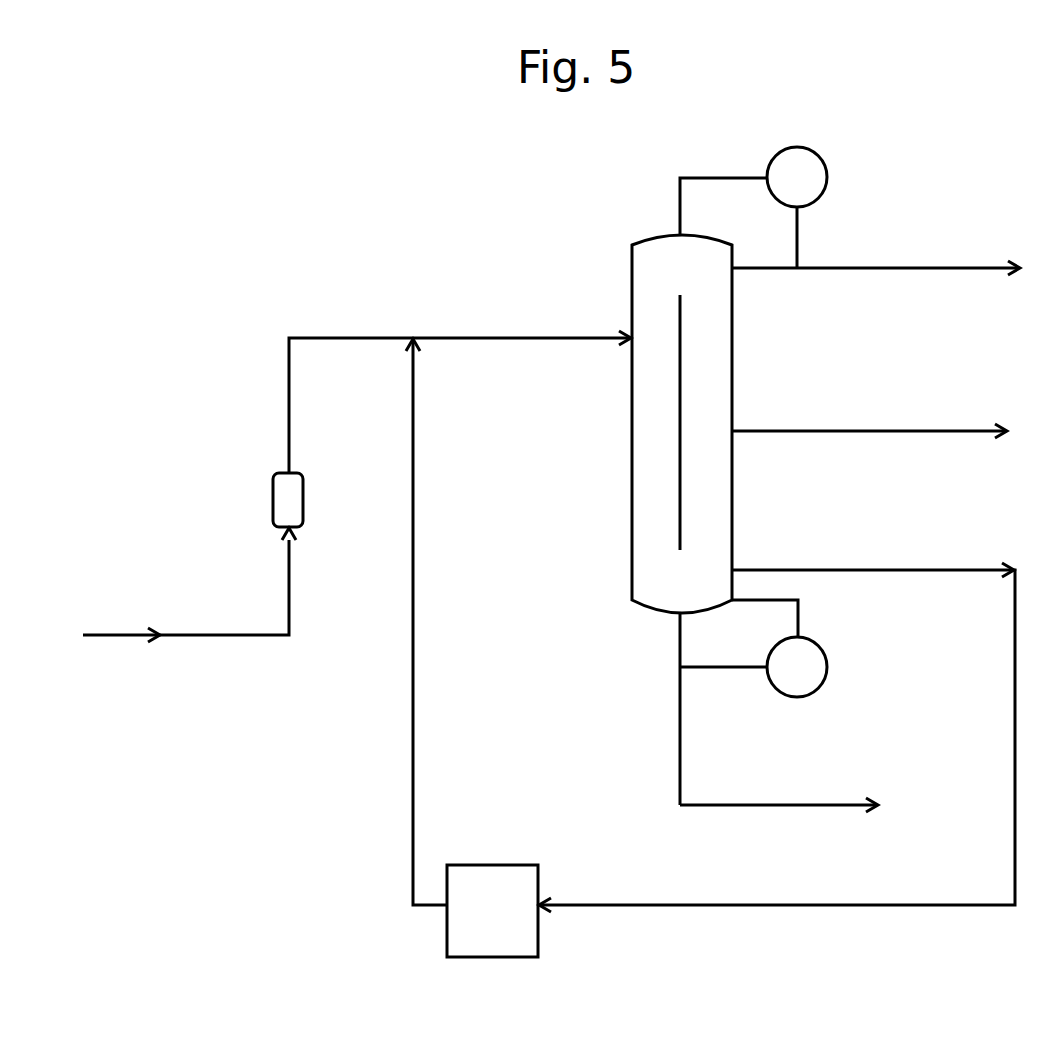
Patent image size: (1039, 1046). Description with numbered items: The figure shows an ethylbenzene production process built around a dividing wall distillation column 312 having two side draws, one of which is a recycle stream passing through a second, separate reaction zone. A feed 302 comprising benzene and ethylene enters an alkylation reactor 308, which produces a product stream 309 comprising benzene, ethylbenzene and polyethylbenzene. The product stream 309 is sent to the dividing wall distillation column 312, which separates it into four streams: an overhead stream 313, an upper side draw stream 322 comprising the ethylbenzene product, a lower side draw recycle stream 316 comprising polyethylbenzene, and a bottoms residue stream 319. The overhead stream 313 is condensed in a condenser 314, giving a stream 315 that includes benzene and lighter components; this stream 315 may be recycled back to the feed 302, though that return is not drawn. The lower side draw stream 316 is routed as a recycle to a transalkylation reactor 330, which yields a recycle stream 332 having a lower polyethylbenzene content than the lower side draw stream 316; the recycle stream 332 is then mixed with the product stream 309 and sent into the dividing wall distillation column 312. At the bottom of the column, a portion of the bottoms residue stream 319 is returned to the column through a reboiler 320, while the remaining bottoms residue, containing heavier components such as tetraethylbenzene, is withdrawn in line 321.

The feed 302 is at (98, 630).
The alkylation reactor 308 is at (268, 500).
The product stream 309 is at (322, 333).
The dividing wall distillation column 312 is at (630, 447).
The overhead stream 313 is at (685, 172).
The condenser 314 is at (835, 177).
The stream 315 is at (918, 263).
The lower side draw recycle stream 316 is at (909, 565).
The bottoms residue stream 319 is at (672, 645).
The reboiler 320 is at (830, 650).
The line 321 is at (750, 798).
The upper side draw stream 322 is at (912, 423).
The transalkylation reactor 330 is at (492, 911).
The recycle stream 332 is at (408, 715).